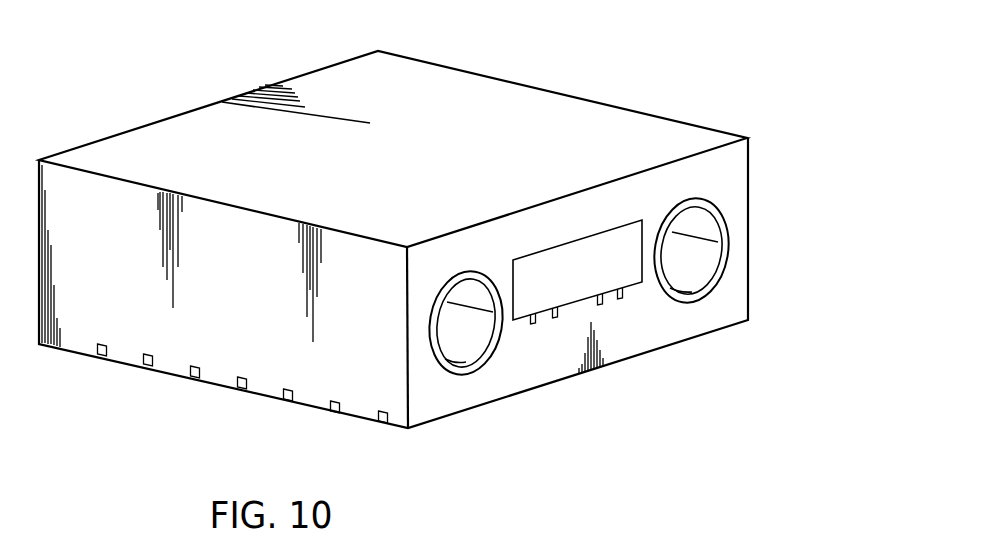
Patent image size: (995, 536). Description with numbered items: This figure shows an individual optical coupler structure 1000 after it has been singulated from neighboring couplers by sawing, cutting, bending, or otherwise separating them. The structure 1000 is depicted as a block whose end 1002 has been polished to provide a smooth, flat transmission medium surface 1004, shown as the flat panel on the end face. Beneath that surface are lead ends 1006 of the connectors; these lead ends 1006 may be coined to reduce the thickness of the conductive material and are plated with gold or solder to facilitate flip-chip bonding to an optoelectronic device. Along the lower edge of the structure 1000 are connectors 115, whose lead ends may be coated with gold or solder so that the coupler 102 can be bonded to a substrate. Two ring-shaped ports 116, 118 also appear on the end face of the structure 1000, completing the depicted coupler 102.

The optical coupler structure 1000 is at (575, 142).
The connector 115 is at (102, 356).
The speaker port 116 is at (702, 262).
The speaker port 118 is at (465, 345).
The end 1002 is at (545, 368).
The transmission medium surface 1004 is at (613, 270).
The lead ends 1006 is at (605, 302).
The coupler 102 is at (692, 528).